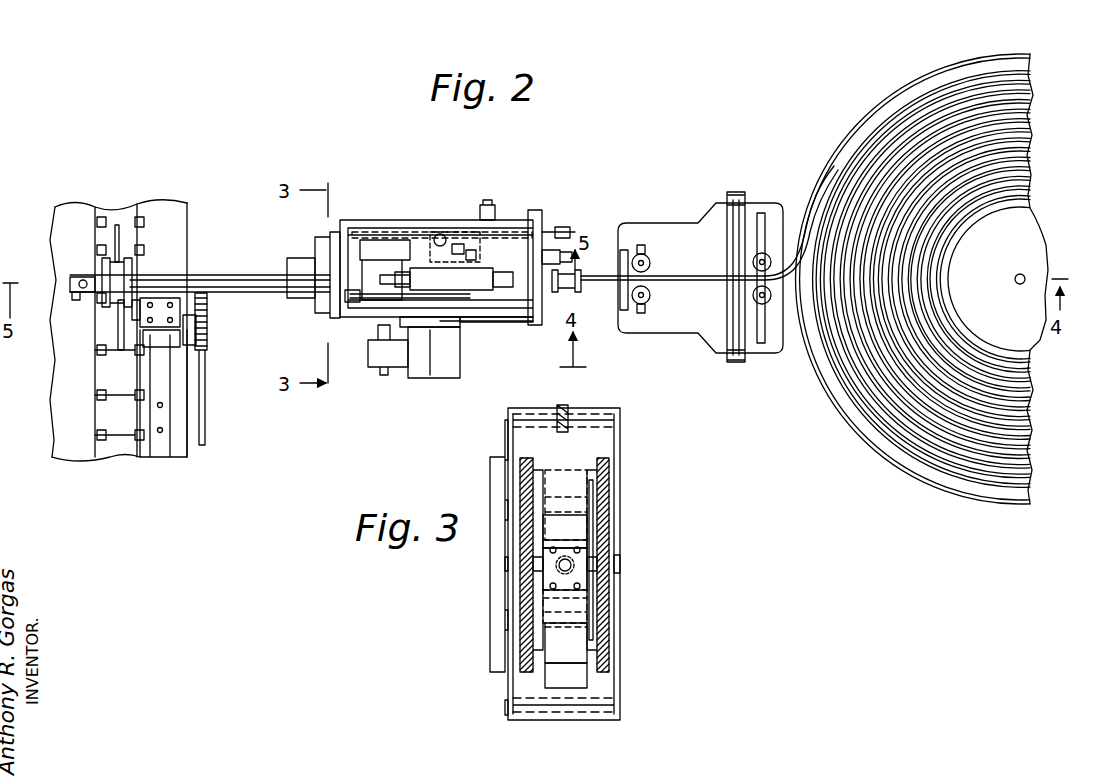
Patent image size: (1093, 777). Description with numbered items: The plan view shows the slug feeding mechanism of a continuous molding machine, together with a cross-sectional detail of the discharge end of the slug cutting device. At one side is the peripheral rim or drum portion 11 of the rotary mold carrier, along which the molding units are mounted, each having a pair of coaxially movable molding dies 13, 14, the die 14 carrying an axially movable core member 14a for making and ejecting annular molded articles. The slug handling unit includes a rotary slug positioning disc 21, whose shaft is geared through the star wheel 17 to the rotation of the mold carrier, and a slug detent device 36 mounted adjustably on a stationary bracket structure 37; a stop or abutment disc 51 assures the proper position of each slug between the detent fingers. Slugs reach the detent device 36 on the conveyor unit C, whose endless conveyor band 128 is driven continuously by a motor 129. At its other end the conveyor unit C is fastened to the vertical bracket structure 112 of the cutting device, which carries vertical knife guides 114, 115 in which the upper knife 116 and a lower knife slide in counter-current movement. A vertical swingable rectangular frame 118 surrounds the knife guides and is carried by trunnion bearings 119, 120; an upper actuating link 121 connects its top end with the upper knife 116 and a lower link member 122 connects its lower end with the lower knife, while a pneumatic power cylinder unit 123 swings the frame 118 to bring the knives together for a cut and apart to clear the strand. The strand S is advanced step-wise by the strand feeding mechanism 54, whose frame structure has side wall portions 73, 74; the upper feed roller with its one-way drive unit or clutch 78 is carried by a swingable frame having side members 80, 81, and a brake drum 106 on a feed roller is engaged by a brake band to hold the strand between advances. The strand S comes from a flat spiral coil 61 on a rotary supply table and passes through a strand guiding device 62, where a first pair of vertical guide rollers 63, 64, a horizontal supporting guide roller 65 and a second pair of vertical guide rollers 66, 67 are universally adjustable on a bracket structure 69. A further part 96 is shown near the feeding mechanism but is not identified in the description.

In FIG. 2, the peripheral rim or drum portion 11 is at (150, 212).
In FIG. 2, the molding die 13 is at (100, 400).
In FIG. 2, the molding die 14 is at (137, 440).
In FIG. 2, the axially movable core member 14a is at (132, 440).
In FIG. 2, the stop or abutment disc 51 is at (115, 243).
In FIG. 2, the slug detent device 36 is at (132, 265).
In FIG. 2, the stationary bracket structure 37 is at (85, 295).
In FIG. 2, the disc 21 is at (118, 343).
In FIG. 2, the star wheel 17 is at (200, 360).
In FIG. 2, the endless conveyer band 128 is at (246, 292).
In FIG. 2, the conveyor unit C is at (236, 271).
In FIG. 2, the vertical swingable rectangular frame 118 is at (318, 240).
In FIG. 3, the vertical swingable rectangular frame 118 is at (622, 452).
In FIG. 2, the strand feeding mechanism 54 is at (512, 195).
In FIG. 2, the one-way coaxial drive unit or clutch 78 is at (372, 248).
In FIG. 2, the side member 80 is at (418, 228).
In FIG. 2, the side wall portion 73 is at (436, 232).
In FIG. 2, the pneumatic power cylinder unit 123 is at (462, 280).
In FIG. 2, the shaft stub 96 is at (552, 250).
In FIG. 2, the brake drum 106 is at (368, 300).
In FIG. 2, the side member 81 is at (432, 327).
In FIG. 2, the side wall portion 74 is at (470, 322).
In FIG. 2, the motor 129 is at (432, 378).
In FIG. 2, the strand S is at (832, 188).
In FIG. 2, the strand guiding device 62 is at (683, 212).
In FIG. 2, the bracket structure 69 is at (690, 325).
In FIG. 2, the first horizontal supporting guide roller 65 is at (727, 262).
In FIG. 2, the vertical guide roller 67 is at (650, 260).
In FIG. 2, the vertical guide roller 66 is at (650, 300).
In FIG. 2, the vertical guide roller 63 is at (767, 258).
In FIG. 2, the vertical guide roller 64 is at (768, 302).
In FIG. 2, the flat spiral coil 61 is at (944, 256).
In FIG. 3, the upper actuating link 121 is at (545, 441).
In FIG. 3, the vertical bracket structure 112 is at (492, 478).
In FIG. 3, the trunnion bearing 119 is at (520, 567).
In FIG. 3, the vertical knife guide 114 is at (580, 524).
In FIG. 3, the upper slug cutting knife 116 is at (582, 571).
In FIG. 3, the trunnion bearing 120 is at (614, 562).
In FIG. 3, the vertical knife guide 115 is at (580, 600).
In FIG. 3, the lower link member 122 is at (555, 689).